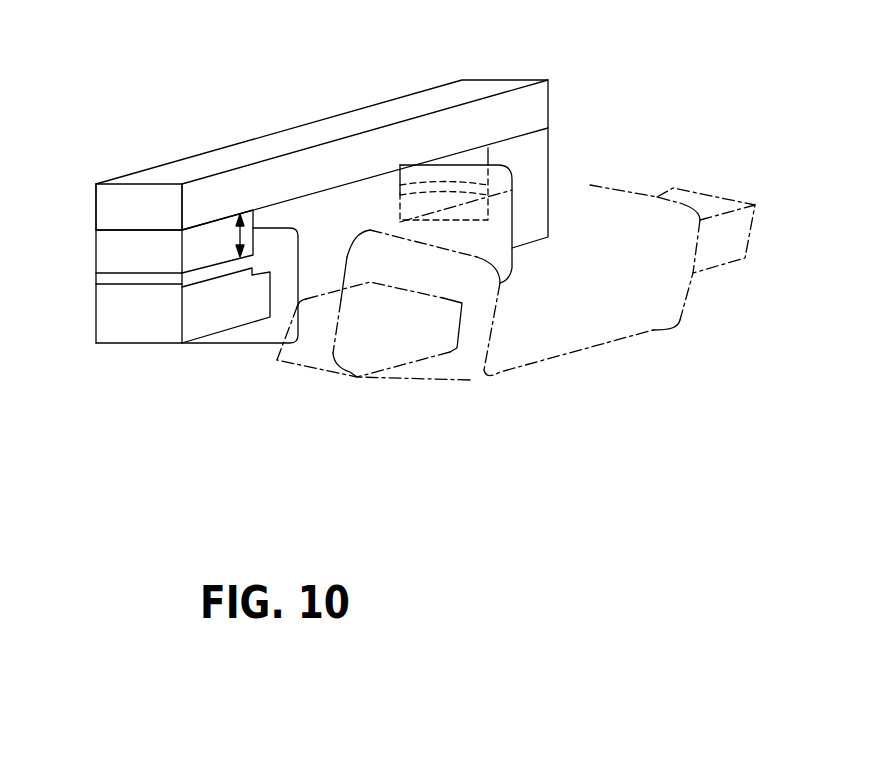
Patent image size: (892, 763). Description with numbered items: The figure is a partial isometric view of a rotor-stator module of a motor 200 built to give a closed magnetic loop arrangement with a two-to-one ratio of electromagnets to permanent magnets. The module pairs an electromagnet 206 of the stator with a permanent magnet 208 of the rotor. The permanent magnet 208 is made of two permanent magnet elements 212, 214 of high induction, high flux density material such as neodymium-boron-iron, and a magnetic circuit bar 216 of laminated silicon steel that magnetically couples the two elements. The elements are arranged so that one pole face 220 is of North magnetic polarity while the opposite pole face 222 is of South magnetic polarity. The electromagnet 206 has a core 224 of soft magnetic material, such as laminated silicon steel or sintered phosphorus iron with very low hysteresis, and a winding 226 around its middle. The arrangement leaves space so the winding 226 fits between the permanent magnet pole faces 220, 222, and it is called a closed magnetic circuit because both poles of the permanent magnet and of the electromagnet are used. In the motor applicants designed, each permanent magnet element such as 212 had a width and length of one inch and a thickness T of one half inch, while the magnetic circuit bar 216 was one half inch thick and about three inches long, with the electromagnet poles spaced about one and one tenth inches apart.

The motor 200 is at (515, 58).
The electromagnet 206 is at (220, 352).
The permanent magnet 208 is at (240, 141).
The permanent magnet element 212 is at (96, 260).
The permanent magnet element 214 is at (550, 138).
The magnetic circuit bar 216 is at (350, 108).
The pole face 220 is at (130, 271).
The pole face 222 is at (510, 178).
The core 224 is at (200, 328).
The winding 226 is at (252, 350).
The thickness T is at (238, 232).